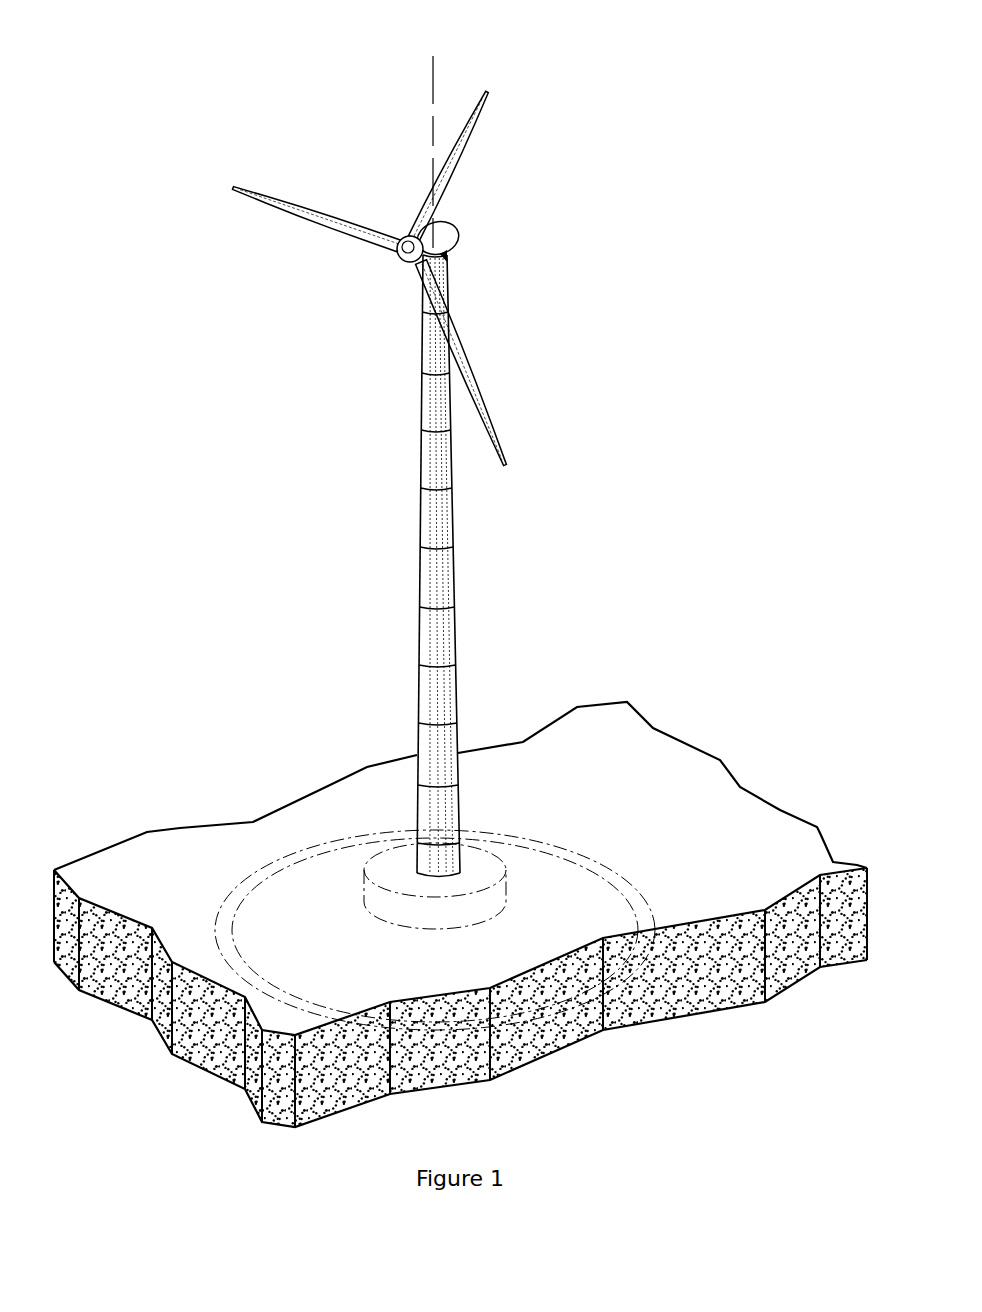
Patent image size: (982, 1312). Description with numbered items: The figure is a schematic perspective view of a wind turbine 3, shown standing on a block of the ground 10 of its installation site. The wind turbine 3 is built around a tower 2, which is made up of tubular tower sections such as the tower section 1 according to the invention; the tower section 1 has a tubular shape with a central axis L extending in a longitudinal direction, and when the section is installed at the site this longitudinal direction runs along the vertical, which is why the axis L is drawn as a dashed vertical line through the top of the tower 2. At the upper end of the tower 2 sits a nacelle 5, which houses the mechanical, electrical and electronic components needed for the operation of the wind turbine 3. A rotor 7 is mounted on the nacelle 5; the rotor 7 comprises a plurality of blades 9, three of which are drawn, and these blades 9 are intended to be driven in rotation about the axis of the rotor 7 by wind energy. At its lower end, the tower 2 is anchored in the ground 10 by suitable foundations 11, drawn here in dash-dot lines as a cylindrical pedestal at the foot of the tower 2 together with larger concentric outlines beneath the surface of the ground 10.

The tower section 1 is at (420, 462).
The tower 2 is at (403, 483).
The wind turbine 3 is at (245, 548).
The nacelle 5 is at (442, 222).
The rotor 7 is at (370, 278).
The blades 9 is at (323, 228).
The ground 10 is at (713, 983).
The foundations 11 is at (588, 887).
The central axis L is at (448, 140).